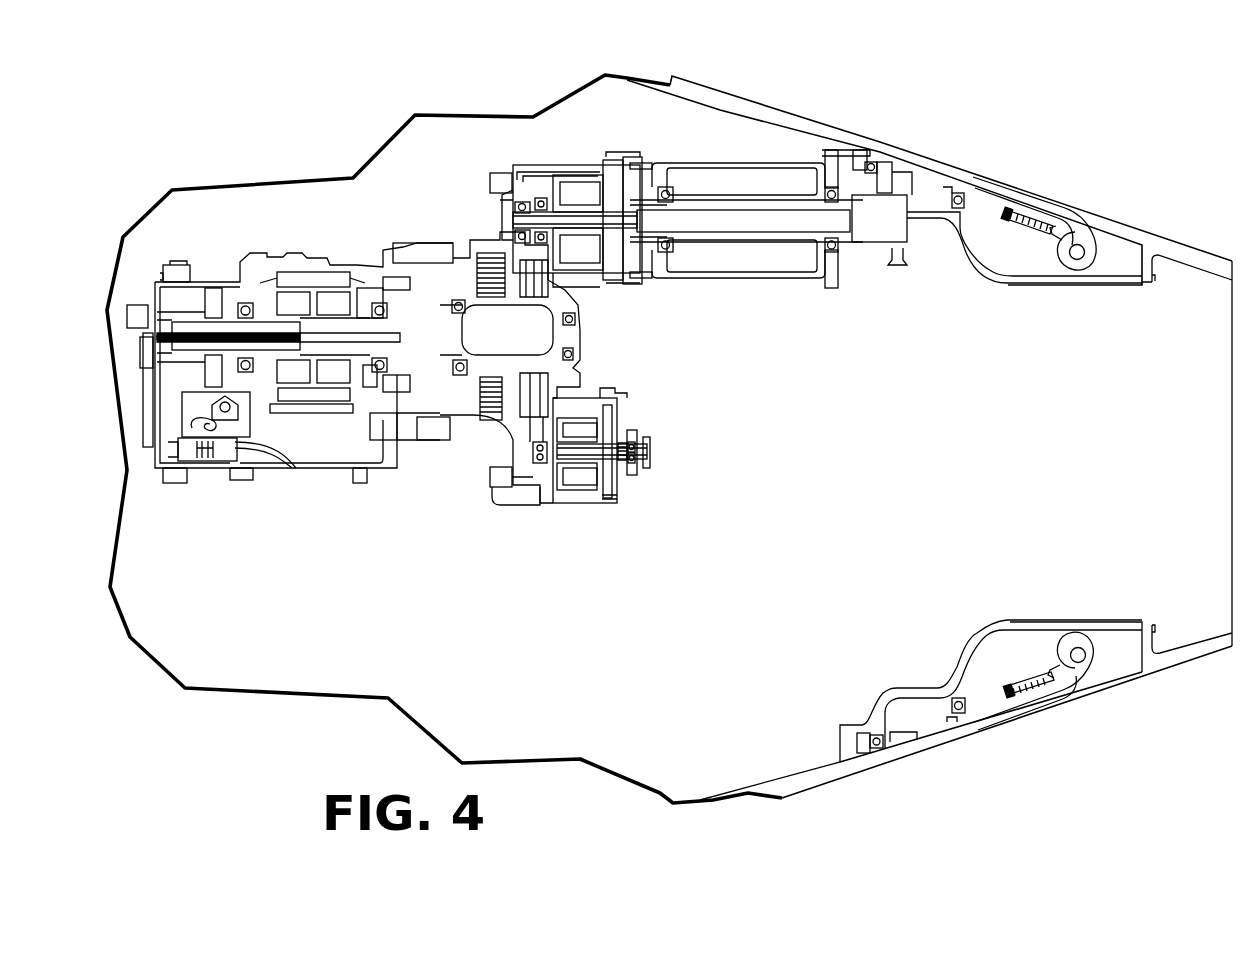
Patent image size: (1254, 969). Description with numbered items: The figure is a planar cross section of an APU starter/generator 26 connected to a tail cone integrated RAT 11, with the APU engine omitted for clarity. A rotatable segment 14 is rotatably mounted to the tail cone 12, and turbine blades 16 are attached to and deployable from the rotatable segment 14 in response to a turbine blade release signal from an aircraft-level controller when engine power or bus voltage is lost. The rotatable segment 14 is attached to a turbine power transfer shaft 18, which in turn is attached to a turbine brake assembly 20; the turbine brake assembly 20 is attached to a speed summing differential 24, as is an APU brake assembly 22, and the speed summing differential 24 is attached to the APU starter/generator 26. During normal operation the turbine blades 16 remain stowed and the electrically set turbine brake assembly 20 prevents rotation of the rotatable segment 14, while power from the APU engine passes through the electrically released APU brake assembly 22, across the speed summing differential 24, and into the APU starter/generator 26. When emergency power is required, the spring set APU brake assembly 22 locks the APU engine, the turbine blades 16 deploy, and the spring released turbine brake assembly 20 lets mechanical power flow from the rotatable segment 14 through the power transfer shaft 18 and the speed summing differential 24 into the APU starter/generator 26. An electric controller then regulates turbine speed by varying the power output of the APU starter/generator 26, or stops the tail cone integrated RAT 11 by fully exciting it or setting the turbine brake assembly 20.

The tail cone integrated RAT 11 is at (884, 58).
The tail cone 12 is at (738, 98).
The rotatable segment 14 is at (920, 152).
The turbine blades 16 is at (1038, 190).
The turbine power transfer shaft 18 is at (733, 215).
The turbine brake assembly 20 is at (585, 187).
The APU brake assembly 22 is at (575, 477).
The speed summing differential 24 is at (470, 262).
The APU starter/generator 26 is at (297, 263).